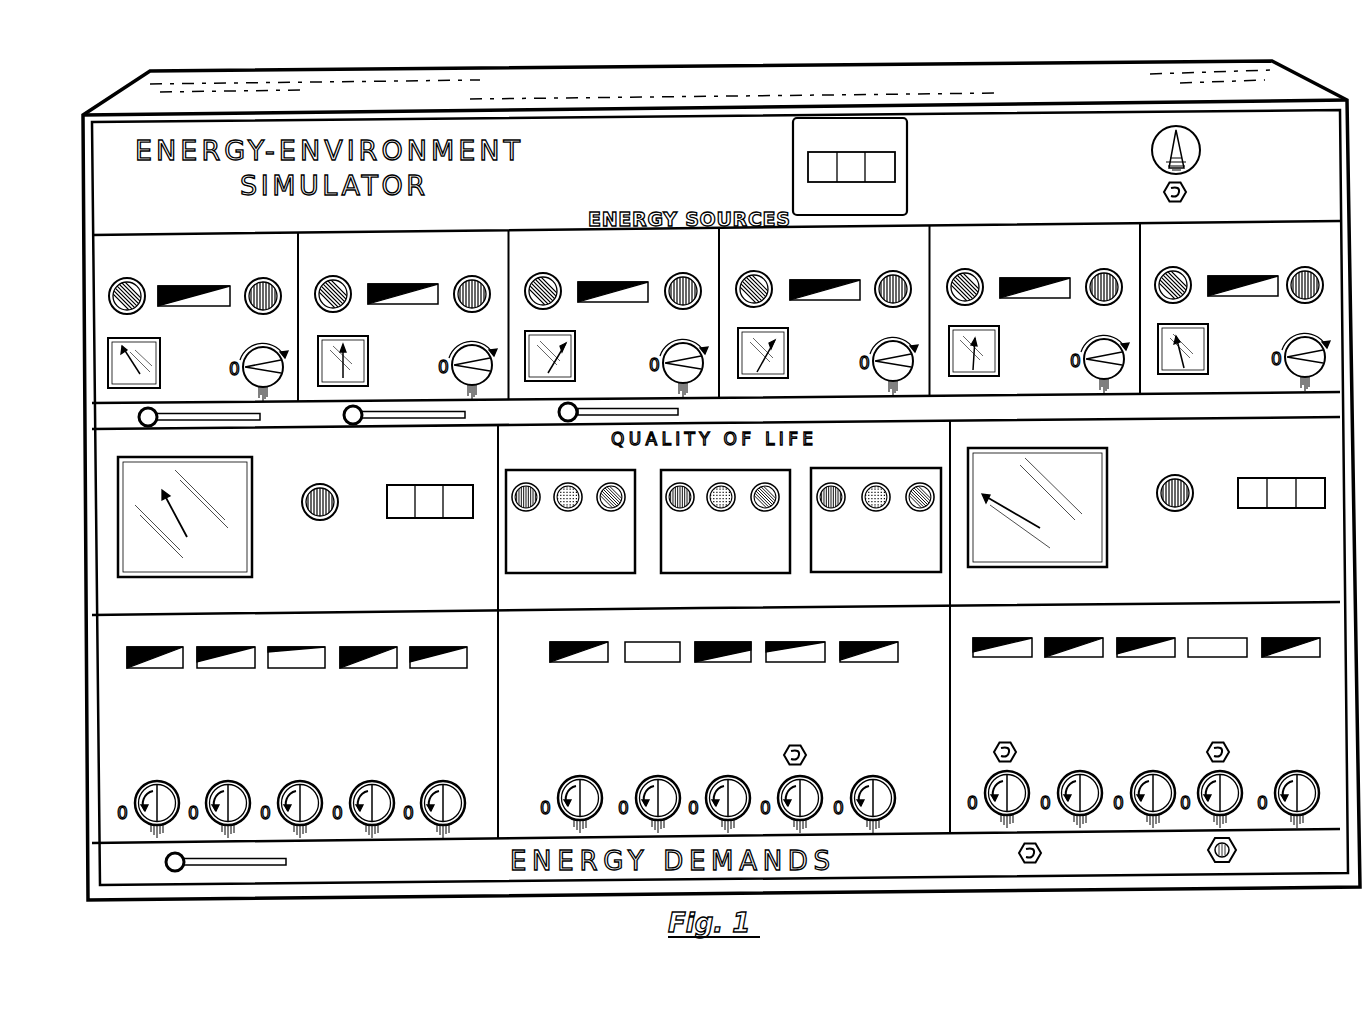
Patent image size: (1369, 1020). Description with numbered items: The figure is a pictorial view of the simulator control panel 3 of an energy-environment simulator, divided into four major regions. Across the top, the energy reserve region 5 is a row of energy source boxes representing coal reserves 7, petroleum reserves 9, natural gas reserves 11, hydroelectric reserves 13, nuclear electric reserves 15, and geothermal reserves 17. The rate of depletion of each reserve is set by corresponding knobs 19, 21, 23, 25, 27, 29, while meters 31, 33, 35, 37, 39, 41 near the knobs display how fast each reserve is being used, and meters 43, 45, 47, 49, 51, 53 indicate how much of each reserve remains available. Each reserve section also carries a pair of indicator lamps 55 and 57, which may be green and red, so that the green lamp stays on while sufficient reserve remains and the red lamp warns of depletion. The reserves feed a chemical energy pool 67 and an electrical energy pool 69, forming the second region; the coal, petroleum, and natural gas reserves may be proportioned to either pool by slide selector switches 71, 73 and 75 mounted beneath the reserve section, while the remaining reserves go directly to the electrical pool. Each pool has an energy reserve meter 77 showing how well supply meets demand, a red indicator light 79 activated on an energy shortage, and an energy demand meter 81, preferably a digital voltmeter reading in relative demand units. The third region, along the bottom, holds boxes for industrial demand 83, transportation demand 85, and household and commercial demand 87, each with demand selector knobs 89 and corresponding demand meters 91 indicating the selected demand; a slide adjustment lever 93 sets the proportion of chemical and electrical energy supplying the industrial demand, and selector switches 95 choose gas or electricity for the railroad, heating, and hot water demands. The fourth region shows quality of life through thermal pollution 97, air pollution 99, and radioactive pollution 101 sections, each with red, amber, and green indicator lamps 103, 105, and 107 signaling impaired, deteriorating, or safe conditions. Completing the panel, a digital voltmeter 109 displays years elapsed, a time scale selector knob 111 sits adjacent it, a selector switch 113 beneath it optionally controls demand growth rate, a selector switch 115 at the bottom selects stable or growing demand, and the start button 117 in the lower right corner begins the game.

The simulator control panel 3 is at (609, 160).
The energy reserve region 5 is at (412, 231).
The coal reserves 7 is at (256, 257).
The petroleum reserves 9 is at (459, 255).
The natural gas reserves 11 is at (693, 253).
The hydroelectric reserves 13 is at (913, 249).
The nuclear electric reserves 15 is at (1124, 247).
The geothermal reserves 17 is at (1331, 245).
The knob 19 is at (245, 381).
The knob 21 is at (455, 379).
The knob 23 is at (662, 377).
The knob 25 is at (873, 375).
The knob 27 is at (1084, 373).
The knob 29 is at (1285, 371).
The meter 31 is at (162, 342).
The meter 33 is at (370, 340).
The meter 35 is at (577, 337).
The meter 37 is at (789, 334).
The meter 39 is at (1000, 332).
The meter 41 is at (1210, 330).
The meter 43 is at (203, 288).
The meter 45 is at (408, 286).
The meter 47 is at (616, 284).
The meter 49 is at (826, 282).
The meter 51 is at (1036, 280).
The meter 53 is at (1244, 278).
The indicator lamp 55 is at (1170, 268).
The indicator lamp 57 is at (1316, 272).
The chemical energy pool 67 is at (468, 464).
The electrical energy pool 69 is at (1313, 456).
The slide selector switch 71 is at (230, 411).
The slide selector switch 73 is at (438, 409).
The slide selector switch 75 is at (655, 406).
The energy reserve meter 77 is at (255, 477).
The red indicator light 79 is at (325, 485).
The energy demand meter 81 is at (404, 485).
The industrial demand 83 is at (136, 644).
The transportation demand 85 is at (541, 644).
The household and commercial demand 87 is at (984, 633).
The demand selector knob 89 is at (220, 782).
The demand meter 91 is at (197, 669).
The slide adjustment lever 93 is at (282, 862).
The selector switch 95 is at (808, 766).
The thermal pollution indicator section 97 is at (557, 574).
The air pollution indicator section 99 is at (705, 574).
The radioactive pollution indicator section 101 is at (845, 573).
The red indicator lamp 103 is at (611, 484).
The amber indicator lamp 105 is at (722, 484).
The green indicator lamp 107 is at (838, 484).
The digital voltmeter 109 is at (908, 166).
The time scale selector knob 111 is at (1196, 138).
The selector switch 113 is at (1188, 190).
The selector switch 115 is at (1032, 865).
The start button 117 is at (1215, 864).